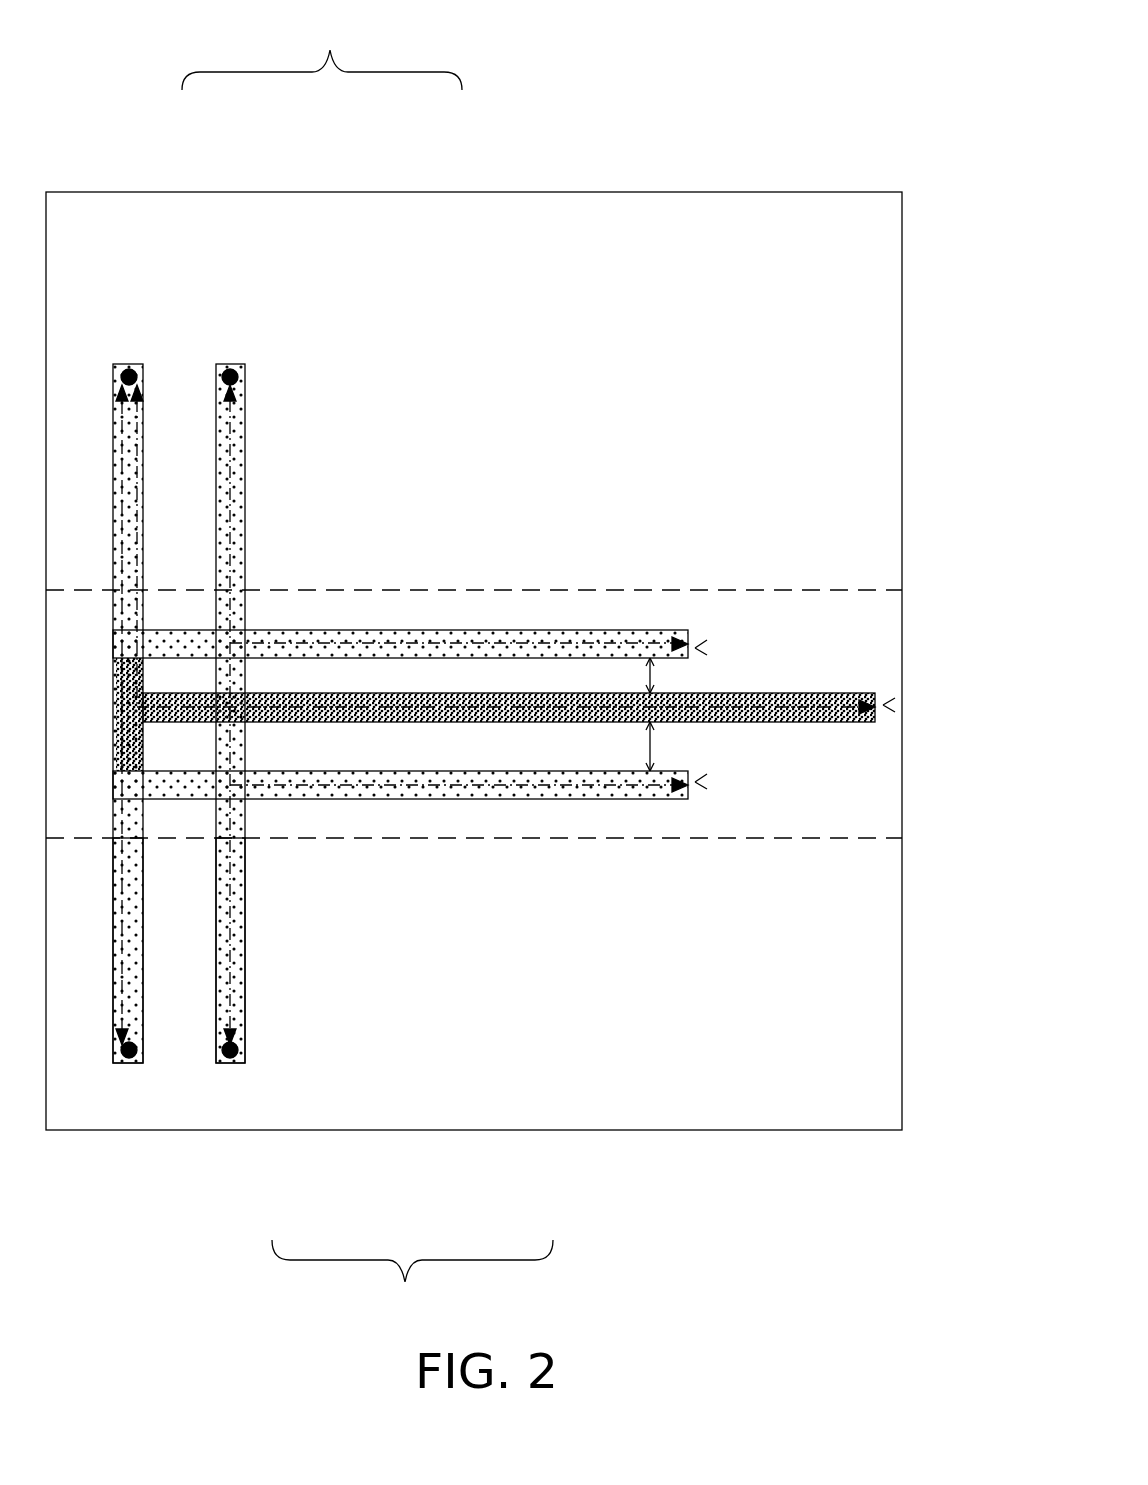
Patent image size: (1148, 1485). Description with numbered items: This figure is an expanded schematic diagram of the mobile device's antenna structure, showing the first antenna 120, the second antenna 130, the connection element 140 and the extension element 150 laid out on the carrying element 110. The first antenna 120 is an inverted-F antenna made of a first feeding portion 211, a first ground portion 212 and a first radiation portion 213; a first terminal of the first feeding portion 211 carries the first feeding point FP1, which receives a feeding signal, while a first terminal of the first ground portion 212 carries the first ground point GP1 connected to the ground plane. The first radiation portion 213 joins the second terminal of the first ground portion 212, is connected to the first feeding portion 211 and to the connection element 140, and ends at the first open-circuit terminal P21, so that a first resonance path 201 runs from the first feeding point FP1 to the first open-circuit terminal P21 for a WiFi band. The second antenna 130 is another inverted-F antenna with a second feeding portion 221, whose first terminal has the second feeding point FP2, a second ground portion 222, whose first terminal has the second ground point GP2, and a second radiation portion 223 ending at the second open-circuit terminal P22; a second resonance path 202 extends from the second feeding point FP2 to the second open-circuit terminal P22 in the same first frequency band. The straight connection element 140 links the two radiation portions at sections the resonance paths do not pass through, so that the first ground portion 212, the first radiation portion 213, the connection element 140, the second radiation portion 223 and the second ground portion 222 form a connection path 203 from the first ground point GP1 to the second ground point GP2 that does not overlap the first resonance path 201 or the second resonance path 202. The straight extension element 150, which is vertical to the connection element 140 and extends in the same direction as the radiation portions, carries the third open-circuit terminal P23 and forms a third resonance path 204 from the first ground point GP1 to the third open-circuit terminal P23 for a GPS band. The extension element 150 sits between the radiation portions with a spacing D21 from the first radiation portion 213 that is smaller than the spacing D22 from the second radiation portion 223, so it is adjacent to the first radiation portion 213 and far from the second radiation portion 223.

The carrying element 110 is at (902, 247).
The first antenna 120 is at (322, 51).
The second antenna 130 is at (412, 1282).
The connection element 140 is at (113, 730).
The extension element 150 is at (825, 682).
The first resonance path 201 is at (350, 630).
The second resonance path 202 is at (345, 800).
The connection path 203 is at (113, 882).
The third resonance path 204 is at (763, 723).
The first feeding portion 211 is at (247, 460).
The first ground portion 212 is at (113, 443).
The first radiation portion 213 is at (511, 630).
The second feeding portion 221 is at (245, 928).
The second ground portion 222 is at (113, 955).
The second radiation portion 223 is at (604, 800).
The first ground point GP1 is at (129, 372).
The first feeding point FP1 is at (230, 372).
The second ground point GP2 is at (129, 1056).
The second feeding point FP2 is at (230, 1056).
The first open-circuit terminal P21 is at (695, 648).
The second open-circuit terminal P22 is at (695, 782).
The third open-circuit terminal P23 is at (883, 705).
The spacing between extension element and first radiation portion D21 is at (652, 667).
The spacing between extension element and second radiation portion D22 is at (652, 757).